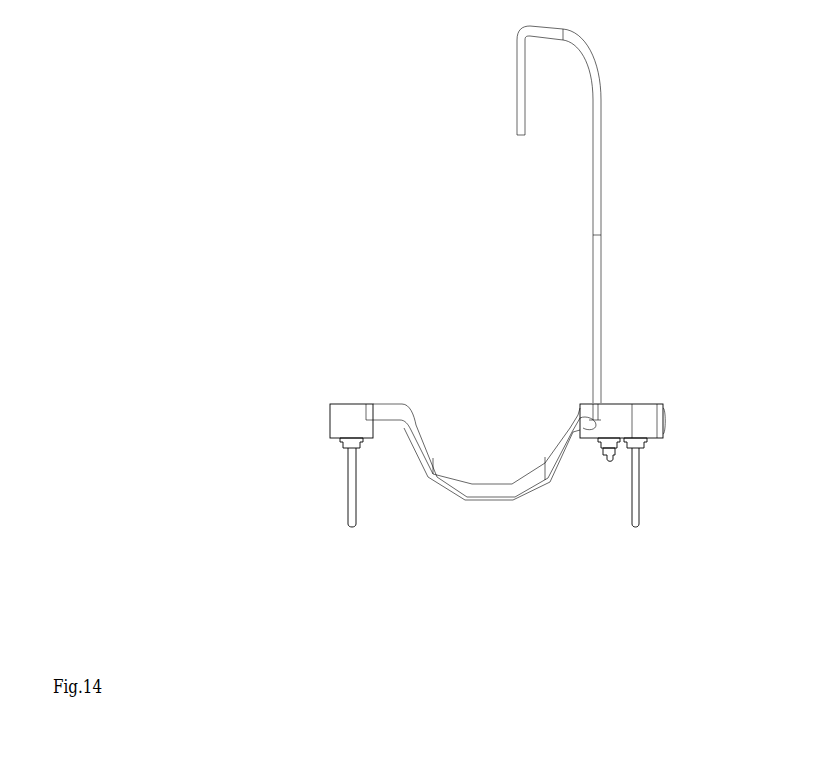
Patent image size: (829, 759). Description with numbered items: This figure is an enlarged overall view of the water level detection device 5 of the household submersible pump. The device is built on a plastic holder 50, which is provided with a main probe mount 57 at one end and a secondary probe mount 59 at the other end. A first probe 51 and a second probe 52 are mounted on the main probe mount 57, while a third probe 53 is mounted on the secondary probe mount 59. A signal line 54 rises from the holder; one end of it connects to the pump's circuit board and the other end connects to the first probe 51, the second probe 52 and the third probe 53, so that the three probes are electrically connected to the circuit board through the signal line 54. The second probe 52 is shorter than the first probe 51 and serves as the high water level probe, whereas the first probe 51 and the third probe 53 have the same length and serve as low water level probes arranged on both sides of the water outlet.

The water level detection device 5 is at (412, 277).
The plastic holder 50 is at (455, 473).
The first probe 51 is at (638, 510).
The second probe 52 is at (605, 455).
The third probe 53 is at (352, 506).
The signal line 54 is at (603, 193).
The main probe mount 57 is at (664, 412).
The secondary probe mount 59 is at (350, 410).